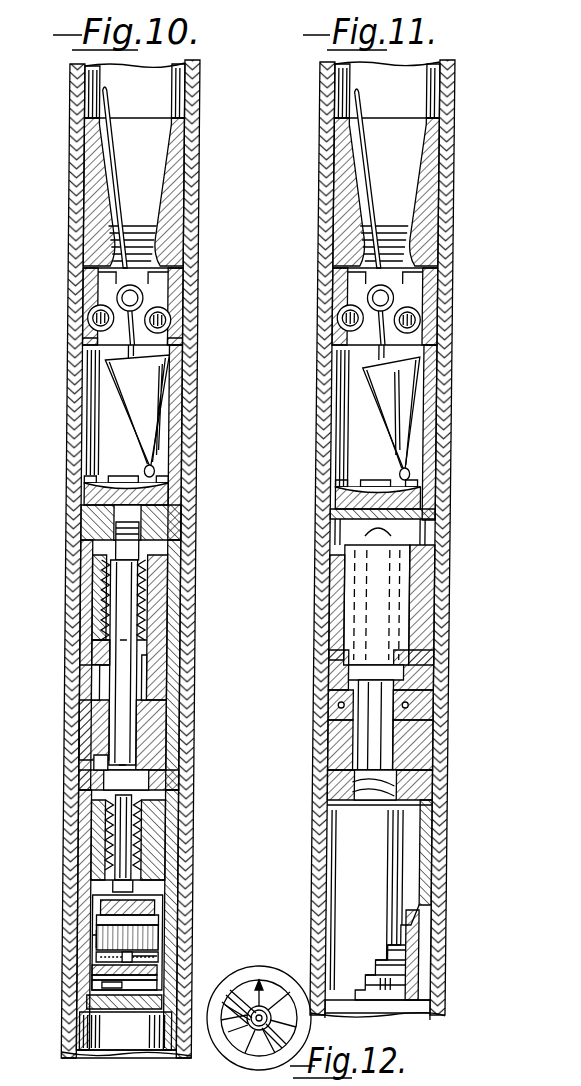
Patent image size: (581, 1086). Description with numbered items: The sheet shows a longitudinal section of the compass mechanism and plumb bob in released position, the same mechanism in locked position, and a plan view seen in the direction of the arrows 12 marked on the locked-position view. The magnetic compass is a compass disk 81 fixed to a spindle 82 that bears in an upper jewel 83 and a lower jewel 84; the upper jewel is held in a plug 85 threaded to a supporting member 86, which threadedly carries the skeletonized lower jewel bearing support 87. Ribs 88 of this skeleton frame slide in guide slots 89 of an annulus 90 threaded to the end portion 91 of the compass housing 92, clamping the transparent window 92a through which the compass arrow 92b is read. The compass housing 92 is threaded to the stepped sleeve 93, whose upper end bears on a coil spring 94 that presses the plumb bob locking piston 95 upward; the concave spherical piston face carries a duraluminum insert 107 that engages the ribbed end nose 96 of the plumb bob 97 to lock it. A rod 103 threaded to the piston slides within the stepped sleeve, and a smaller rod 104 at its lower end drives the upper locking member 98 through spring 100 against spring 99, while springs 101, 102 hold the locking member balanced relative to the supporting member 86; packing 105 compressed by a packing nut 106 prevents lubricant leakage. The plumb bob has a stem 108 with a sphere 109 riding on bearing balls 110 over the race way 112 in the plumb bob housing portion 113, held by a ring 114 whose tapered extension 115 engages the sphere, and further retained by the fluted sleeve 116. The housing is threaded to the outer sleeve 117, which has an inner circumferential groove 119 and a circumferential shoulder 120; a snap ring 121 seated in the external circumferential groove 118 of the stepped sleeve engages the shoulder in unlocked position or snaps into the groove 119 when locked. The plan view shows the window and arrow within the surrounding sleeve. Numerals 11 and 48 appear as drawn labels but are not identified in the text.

In FIG. 10, the ball 11 is at (48, 302).
In FIG. 11, the ball 11 is at (420, 300).
In FIG. 11, the arrows 12— 12 is at (342, 1010).
In FIG. 10, the tubular housing 48 is at (76, 376).
In FIG. 11, the tubular housing 48 is at (322, 557).
In FIG. 10, the compass disk 81 is at (162, 951).
In FIG. 11, the compass disk 81 is at (432, 951).
In FIG. 10, the spindle 82 is at (88, 971).
In FIG. 10, the upper jewel 83 is at (167, 926).
In FIG. 10, the lower jewel 84 is at (102, 1002).
In FIG. 10, the plug 85 is at (162, 940).
In FIG. 10, the supporting member 86 is at (82, 932).
In FIG. 11, the supporting member 86 is at (424, 916).
In FIG. 10, the skeletonized lower jewel bearing support 87 is at (92, 986).
In FIG. 10, the ribs 88 is at (92, 952).
In FIG. 10, the guide slots 89 is at (125, 1031).
In FIG. 10, the annulus 90 is at (92, 992).
In FIG. 11, the annulus 90 is at (437, 966).
In FIG. 10, the end portion 91 is at (188, 1035).
In FIG. 11, the end portion 91 is at (442, 991).
In FIG. 12, the end portion 91 is at (238, 992).
In FIG. 10, the compass housing 92 is at (182, 896).
In FIG. 11, the compass housing 92 is at (342, 826).
In FIG. 10, the transparent window 92a is at (98, 1028).
In FIG. 12, the transparent window 92a is at (272, 995).
In FIG. 12, the compass arrow 92b is at (262, 985).
In FIG. 10, the stepped sleeve 93 is at (72, 713).
In FIG. 11, the stepped sleeve 93 is at (327, 750).
In FIG. 10, the coil spring 94 is at (152, 601).
In FIG. 10, the plumb bob locking piston 95 is at (166, 525).
In FIG. 11, the plumb bob locking piston 95 is at (422, 521).
In FIG. 10, the ribbed end nose 96 is at (157, 466).
In FIG. 11, the ribbed end nose 96 is at (417, 461).
In FIG. 10, the plumb bob 97 is at (160, 420).
In FIG. 11, the plumb bob 97 is at (407, 396).
In FIG. 10, the upper locking member 98 is at (162, 956).
In FIG. 11, the upper locking member 98 is at (432, 936).
In FIG. 10, the spring 99 is at (172, 811).
In FIG. 10, the spring 100 is at (162, 850).
In FIG. 10, the spring 101 is at (78, 896).
In FIG. 10, the spring 102 is at (92, 916).
In FIG. 10, the rod 103 is at (137, 623).
In FIG. 11, the rod 103 is at (387, 676).
In FIG. 10, the smaller rod 104 is at (132, 830).
In FIG. 10, the packing 105 is at (166, 839).
In FIG. 10, the packing nut 106 is at (172, 871).
In FIG. 10, the duraluminum insert 107 is at (165, 495).
In FIG. 11, the duraluminum insert 107 is at (422, 491).
In FIG. 10, the stem 108 is at (190, 246).
In FIG. 11, the stem 108 is at (337, 118).
In FIG. 10, the sphere 109 is at (180, 293).
In FIG. 11, the sphere 109 is at (445, 246).
In FIG. 10, the bearing balls 110 is at (168, 322).
In FIG. 11, the bearing balls 110 is at (342, 325).
In FIG. 10, the race way 112 is at (186, 347).
In FIG. 10, the plumb bob housing portion 113 is at (186, 381).
In FIG. 11, the plumb bob housing portion 113 is at (340, 488).
In FIG. 10, the ring 114 is at (170, 272).
In FIG. 10, the tapered extension 115 is at (96, 265).
In FIG. 11, the tapered extension 115 is at (372, 268).
In FIG. 10, the fluted sleeve 116 is at (181, 216).
In FIG. 11, the fluted sleeve 116 is at (346, 156).
In FIG. 10, the outer sleeve 117 is at (172, 666).
In FIG. 11, the outer sleeve 117 is at (342, 656).
In FIG. 10, the external circumferential groove 118 is at (186, 721).
In FIG. 11, the external circumferential groove 118 is at (327, 721).
In FIG. 10, the inner circumferential groove 119 is at (184, 693).
In FIG. 11, the inner circumferential groove 119 is at (352, 701).
In FIG. 10, the circumferential shoulder 120 is at (160, 741).
In FIG. 10, the snap ring 121 is at (96, 742).
In FIG. 11, the snap ring 121 is at (417, 705).